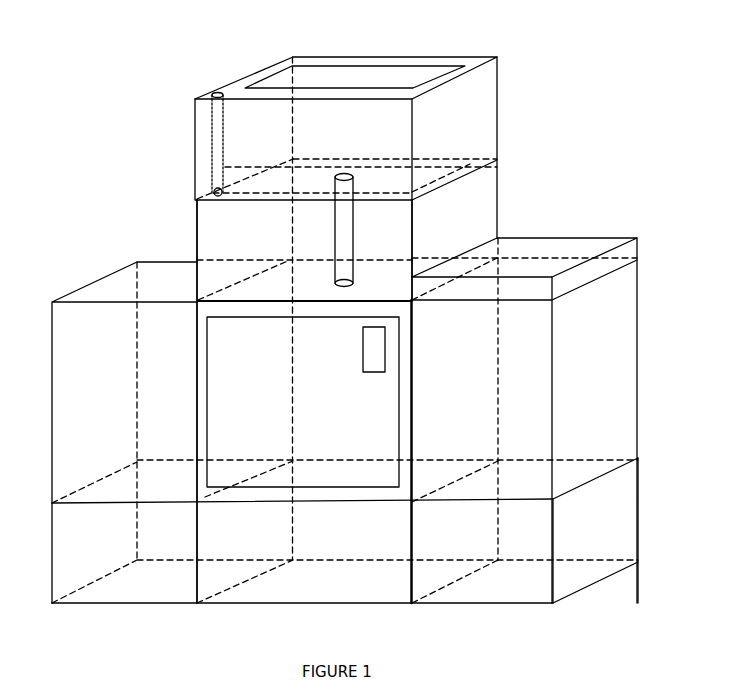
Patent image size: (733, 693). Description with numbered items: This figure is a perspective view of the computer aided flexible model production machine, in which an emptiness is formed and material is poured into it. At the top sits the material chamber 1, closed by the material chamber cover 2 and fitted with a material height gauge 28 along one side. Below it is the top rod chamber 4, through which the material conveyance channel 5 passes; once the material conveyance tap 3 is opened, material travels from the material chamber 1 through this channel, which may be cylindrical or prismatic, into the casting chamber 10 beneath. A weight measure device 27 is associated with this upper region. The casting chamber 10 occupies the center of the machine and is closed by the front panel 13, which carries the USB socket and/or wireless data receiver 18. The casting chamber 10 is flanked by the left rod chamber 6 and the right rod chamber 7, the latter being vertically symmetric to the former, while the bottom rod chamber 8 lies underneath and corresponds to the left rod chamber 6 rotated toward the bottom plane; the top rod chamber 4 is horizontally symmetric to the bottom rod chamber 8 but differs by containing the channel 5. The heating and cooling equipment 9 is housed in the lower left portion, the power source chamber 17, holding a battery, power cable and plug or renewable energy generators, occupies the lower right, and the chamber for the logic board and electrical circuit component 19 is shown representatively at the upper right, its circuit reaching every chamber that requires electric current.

The material chamber 1 is at (478, 118).
The material chamber cover 2 is at (397, 70).
The material conveyance tap 3 is at (347, 178).
The top rod chamber 4 is at (483, 207).
The material conveyance channel 5 is at (343, 245).
The left rod chamber 6 is at (72, 380).
The right rod chamber 7 is at (622, 295).
The bottom rod chamber 8 is at (363, 587).
The heating and cooling equipment 9 is at (72, 567).
The casting chamber 10 is at (192, 333).
The front panel 13 is at (388, 472).
The power source chamber 17 is at (625, 520).
The USB socket and/or wireless data receiver 18 is at (382, 343).
The logic board and electrical circuit component 19 is at (637, 250).
The weight measure device 27 is at (480, 170).
The material height gauge 28 is at (222, 138).